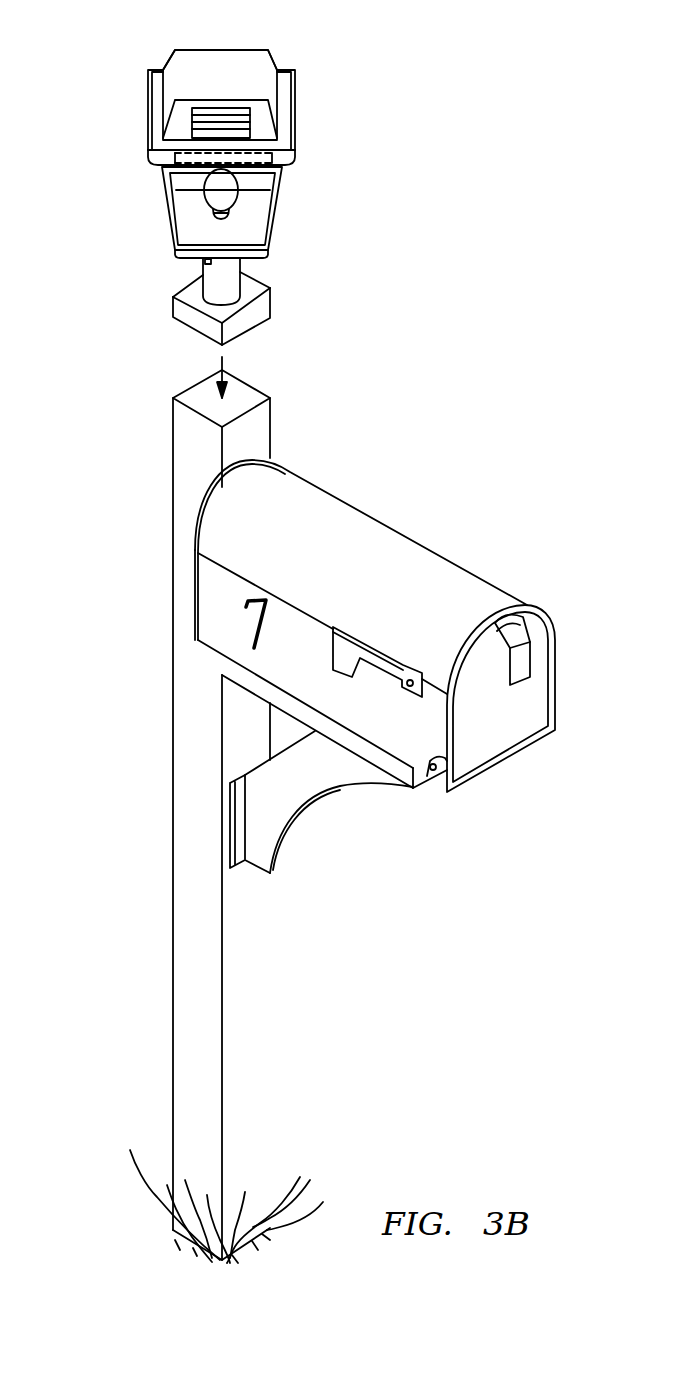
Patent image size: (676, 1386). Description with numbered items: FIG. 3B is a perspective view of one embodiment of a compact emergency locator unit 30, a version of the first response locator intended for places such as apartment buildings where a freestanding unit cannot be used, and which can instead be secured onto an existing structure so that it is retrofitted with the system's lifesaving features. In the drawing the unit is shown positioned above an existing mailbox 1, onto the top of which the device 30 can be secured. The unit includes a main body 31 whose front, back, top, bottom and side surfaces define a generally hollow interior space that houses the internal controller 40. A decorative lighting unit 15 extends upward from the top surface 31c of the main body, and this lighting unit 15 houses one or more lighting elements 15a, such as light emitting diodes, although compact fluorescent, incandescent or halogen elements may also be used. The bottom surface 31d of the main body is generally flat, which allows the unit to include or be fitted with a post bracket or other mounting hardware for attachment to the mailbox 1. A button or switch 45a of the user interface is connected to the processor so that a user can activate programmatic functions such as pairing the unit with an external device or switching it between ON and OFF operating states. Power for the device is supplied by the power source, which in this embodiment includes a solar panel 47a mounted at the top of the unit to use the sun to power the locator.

The existing mailbox 1 is at (145, 503).
The lighting unit 15 is at (145, 200).
The lighting element 15a is at (230, 197).
The compact emergency locator unit 30 is at (127, 63).
The main body 31 is at (246, 278).
The top surface 31c is at (205, 263).
The bottom surface 31d is at (247, 297).
The internal controller 40 is at (170, 152).
The button/switch 45a is at (272, 252).
The solar panel 47a is at (232, 118).